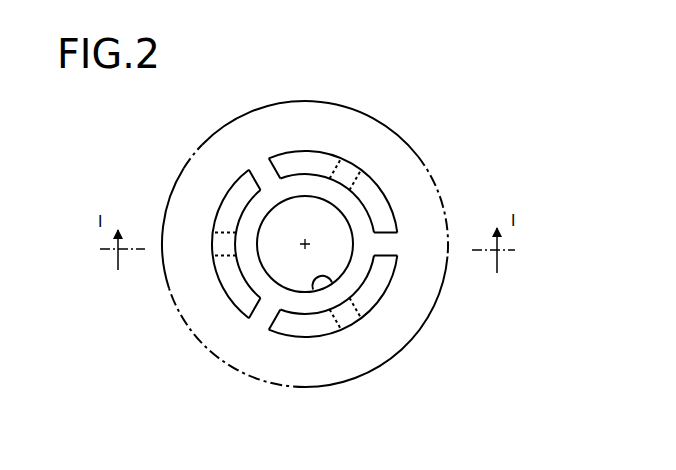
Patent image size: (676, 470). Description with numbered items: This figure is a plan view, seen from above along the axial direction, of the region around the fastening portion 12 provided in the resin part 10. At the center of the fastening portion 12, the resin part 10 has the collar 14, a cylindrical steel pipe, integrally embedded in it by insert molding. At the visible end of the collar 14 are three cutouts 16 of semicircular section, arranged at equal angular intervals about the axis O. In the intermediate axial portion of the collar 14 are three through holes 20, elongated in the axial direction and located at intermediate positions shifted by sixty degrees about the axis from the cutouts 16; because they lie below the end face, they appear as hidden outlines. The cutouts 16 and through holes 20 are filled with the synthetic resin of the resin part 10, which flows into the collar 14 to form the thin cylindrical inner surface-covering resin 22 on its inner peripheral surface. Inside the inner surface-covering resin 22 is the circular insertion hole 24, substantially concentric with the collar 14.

The resin part 10 is at (210, 158).
The fastening portion 12 is at (396, 164).
The collar 14 is at (305, 160).
The cutouts 16 is at (262, 165).
The through holes 20 is at (348, 172).
The inner surface-covering resin 22 is at (250, 272).
The insertion hole 24 is at (316, 280).